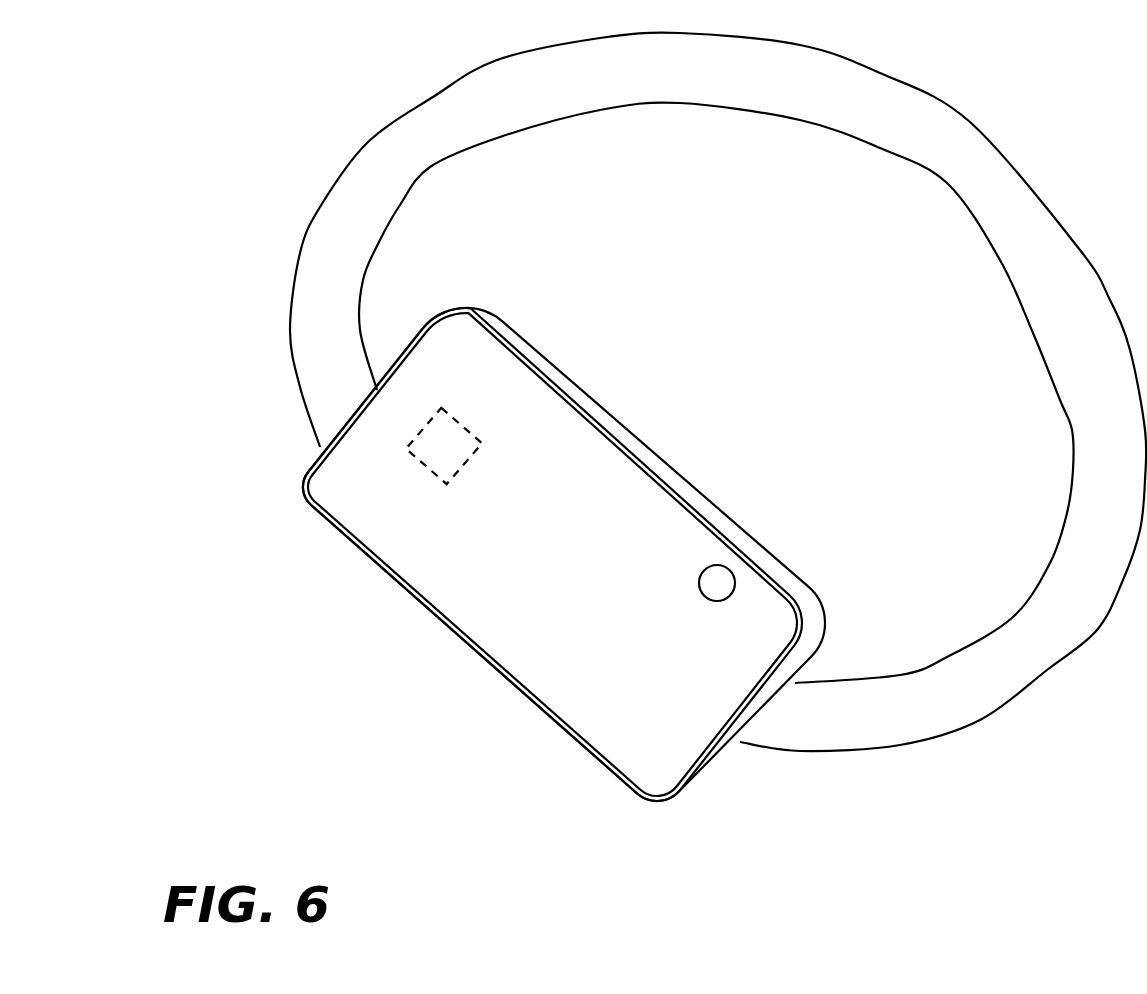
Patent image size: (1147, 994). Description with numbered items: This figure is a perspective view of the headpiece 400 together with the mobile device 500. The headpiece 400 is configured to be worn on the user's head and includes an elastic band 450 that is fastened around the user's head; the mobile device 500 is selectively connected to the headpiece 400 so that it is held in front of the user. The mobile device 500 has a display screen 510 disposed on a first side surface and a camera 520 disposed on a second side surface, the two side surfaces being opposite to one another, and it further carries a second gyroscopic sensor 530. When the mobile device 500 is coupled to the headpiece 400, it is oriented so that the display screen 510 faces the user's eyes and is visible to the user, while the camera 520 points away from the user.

The headpiece 400 is at (781, 834).
The elastic band 450 is at (973, 697).
The mobile device 500 is at (582, 685).
The display screen 510 is at (726, 453).
The camera 520 is at (699, 584).
The second gyroscopic sensor 530 is at (428, 423).